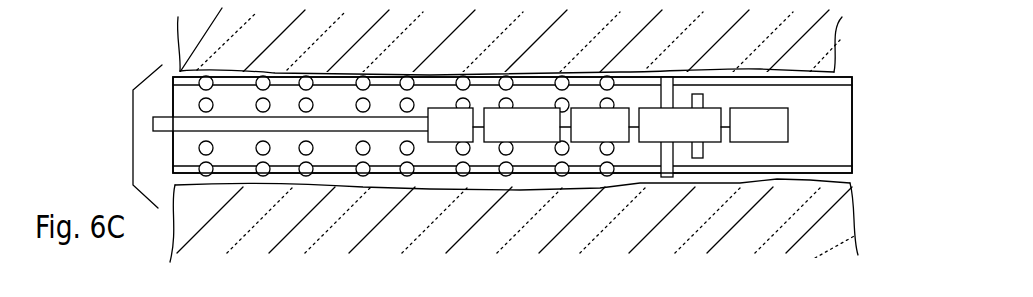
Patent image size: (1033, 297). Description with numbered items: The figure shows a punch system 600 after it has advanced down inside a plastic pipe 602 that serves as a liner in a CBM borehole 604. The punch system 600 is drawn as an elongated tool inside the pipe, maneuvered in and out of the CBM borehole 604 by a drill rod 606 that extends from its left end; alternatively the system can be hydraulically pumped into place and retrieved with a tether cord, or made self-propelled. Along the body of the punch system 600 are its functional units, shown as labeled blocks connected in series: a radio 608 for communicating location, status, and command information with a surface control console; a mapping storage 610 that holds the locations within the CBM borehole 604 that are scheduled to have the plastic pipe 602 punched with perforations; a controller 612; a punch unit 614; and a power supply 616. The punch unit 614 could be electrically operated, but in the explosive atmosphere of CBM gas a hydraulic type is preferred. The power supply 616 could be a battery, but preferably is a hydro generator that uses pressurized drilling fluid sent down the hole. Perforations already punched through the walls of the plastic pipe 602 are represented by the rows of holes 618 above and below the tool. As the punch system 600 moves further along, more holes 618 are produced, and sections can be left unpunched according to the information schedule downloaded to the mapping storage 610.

The punch system 600 is at (120, 33).
The plastic pipe 602 is at (129, 142).
The CBM borehole 604 is at (838, 117).
The drill rod 606 is at (168, 108).
The radio 608 is at (465, 142).
The mapping storage 610 is at (522, 142).
The controller 612 is at (580, 142).
The punch unit 614 is at (667, 150).
The power supply 616 is at (757, 142).
The holes 618 is at (262, 76).